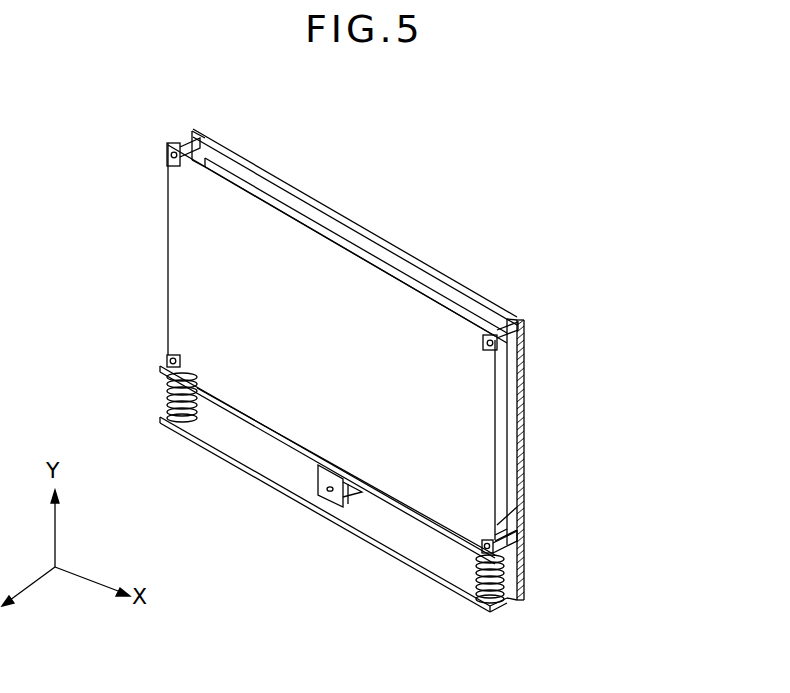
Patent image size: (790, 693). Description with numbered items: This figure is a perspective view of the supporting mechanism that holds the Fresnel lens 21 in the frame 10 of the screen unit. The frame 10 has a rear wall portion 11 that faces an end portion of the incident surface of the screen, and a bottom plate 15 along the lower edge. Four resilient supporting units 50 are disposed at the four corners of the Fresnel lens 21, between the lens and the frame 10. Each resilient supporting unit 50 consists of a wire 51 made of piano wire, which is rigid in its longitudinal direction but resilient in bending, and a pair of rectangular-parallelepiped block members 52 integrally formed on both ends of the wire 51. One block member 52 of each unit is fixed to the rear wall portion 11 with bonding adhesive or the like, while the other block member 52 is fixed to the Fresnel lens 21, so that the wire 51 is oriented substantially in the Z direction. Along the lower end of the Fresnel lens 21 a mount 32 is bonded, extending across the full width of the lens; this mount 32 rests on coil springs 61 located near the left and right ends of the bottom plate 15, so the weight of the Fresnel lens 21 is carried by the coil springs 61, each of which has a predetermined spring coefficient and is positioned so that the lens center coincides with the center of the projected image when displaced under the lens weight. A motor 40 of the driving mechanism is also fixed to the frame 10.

The frame 10 is at (512, 458).
The rear wall portion 11 is at (523, 393).
The bottom plate 15 is at (433, 555).
The Fresnel lens 21 is at (333, 273).
The mount 32 is at (242, 415).
The motor 40 is at (355, 497).
The resilient supporting unit 50 is at (172, 55).
The wire 51 is at (187, 150).
The block member 52 is at (193, 130).
The coil spring 61 is at (168, 403).